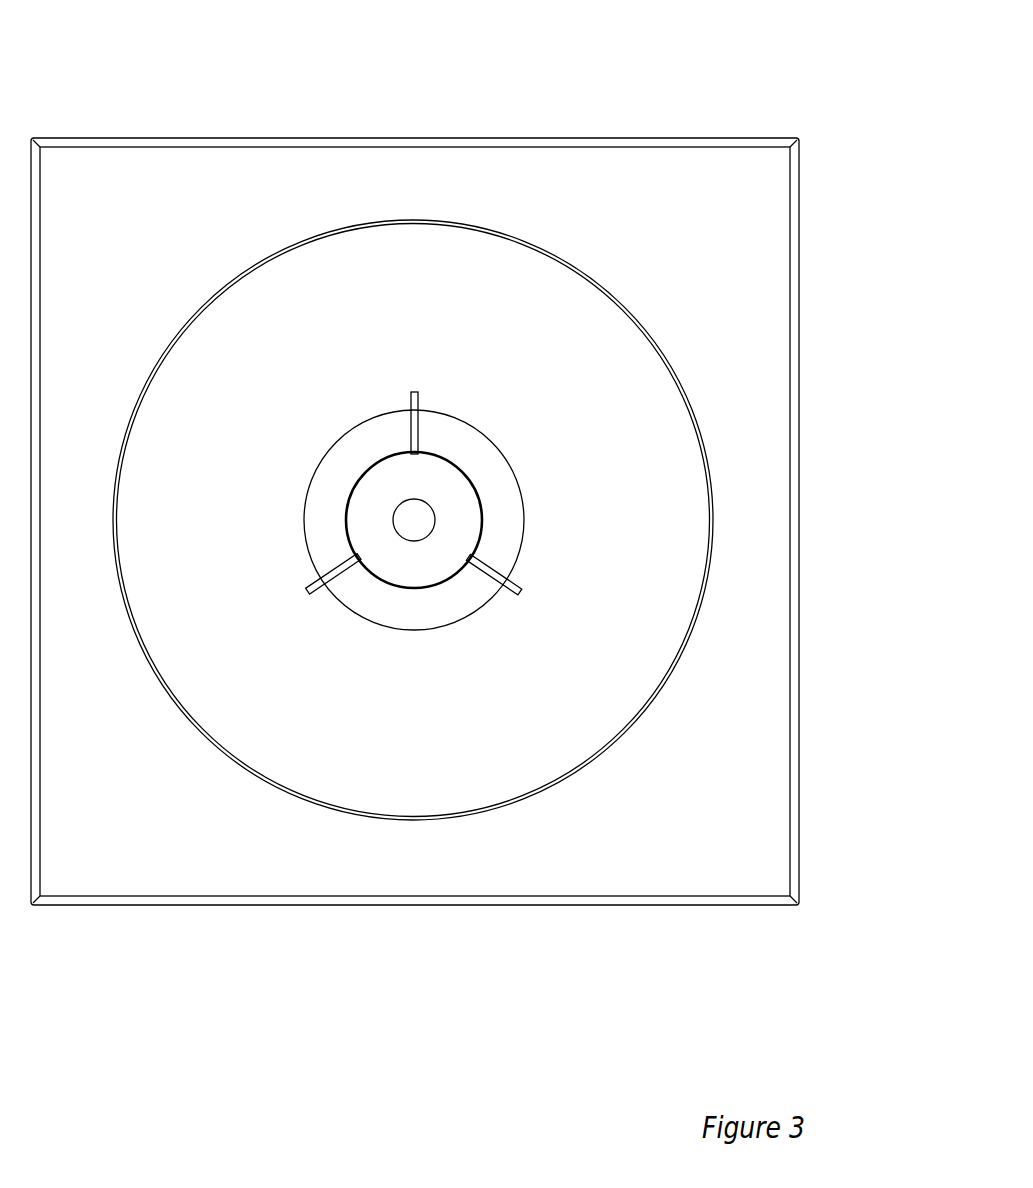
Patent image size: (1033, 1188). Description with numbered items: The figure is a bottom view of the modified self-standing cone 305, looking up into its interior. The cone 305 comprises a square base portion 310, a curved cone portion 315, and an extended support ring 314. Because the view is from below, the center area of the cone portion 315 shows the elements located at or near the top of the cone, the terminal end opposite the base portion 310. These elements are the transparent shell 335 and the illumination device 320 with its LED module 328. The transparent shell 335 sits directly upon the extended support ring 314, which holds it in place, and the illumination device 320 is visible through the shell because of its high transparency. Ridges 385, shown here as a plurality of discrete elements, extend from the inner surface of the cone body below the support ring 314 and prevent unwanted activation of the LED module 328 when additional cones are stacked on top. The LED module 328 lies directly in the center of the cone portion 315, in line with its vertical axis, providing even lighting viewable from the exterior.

The modified self-standing cone 305 is at (537, 103).
The square base portion 310 is at (215, 901).
The extended support ring 314 is at (340, 452).
The curved cone portion 315 is at (152, 408).
The illumination device 320 is at (442, 493).
The LED module 328 is at (427, 523).
The transparent shell 335 is at (428, 579).
The ridges 385 is at (310, 590).